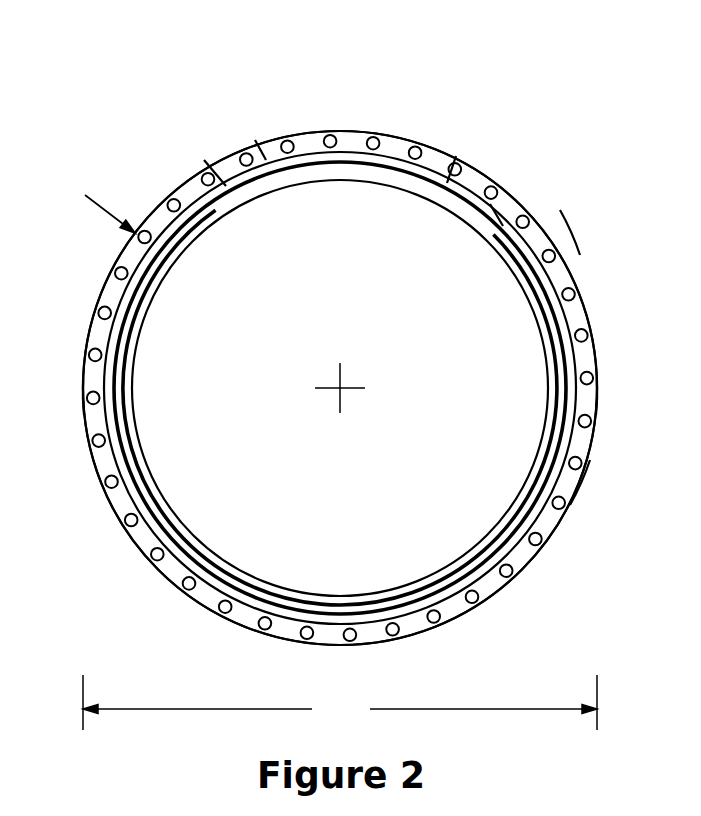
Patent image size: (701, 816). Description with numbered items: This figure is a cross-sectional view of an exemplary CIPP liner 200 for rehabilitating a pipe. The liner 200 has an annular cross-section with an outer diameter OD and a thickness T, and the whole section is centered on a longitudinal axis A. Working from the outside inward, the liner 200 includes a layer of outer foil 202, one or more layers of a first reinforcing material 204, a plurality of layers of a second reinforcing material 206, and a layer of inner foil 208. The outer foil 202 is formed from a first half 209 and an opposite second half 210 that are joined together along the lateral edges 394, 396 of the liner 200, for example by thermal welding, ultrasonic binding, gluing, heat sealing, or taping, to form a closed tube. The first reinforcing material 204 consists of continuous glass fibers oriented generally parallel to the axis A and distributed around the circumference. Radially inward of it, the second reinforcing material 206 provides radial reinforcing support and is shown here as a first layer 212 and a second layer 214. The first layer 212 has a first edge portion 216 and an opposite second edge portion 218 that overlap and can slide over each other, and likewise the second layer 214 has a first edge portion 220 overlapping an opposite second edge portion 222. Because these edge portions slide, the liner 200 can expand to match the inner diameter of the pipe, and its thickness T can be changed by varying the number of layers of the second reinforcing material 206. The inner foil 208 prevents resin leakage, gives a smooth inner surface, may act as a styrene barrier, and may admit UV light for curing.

The liner 200 is at (635, 122).
The outer foil layer 202 is at (531, 581).
The first reinforcing material 204 is at (595, 287).
The second reinforcing material 206 is at (208, 589).
The inner foil layer 208 is at (136, 425).
The first half 209 is at (580, 483).
The second half 210 is at (545, 233).
The first layer 212 is at (318, 147).
The second layer 214 is at (386, 163).
The first edge portion 216 is at (254, 147).
The second edge portion 218 is at (210, 165).
The first edge portion 220 is at (492, 212).
The second edge portion 222 is at (453, 163).
The lateral edge 394 is at (597, 398).
The lateral edge 396 is at (85, 400).
The thickness T is at (181, 267).
The longitudinal axis A is at (347, 383).
The outer diameter OD is at (340, 702).